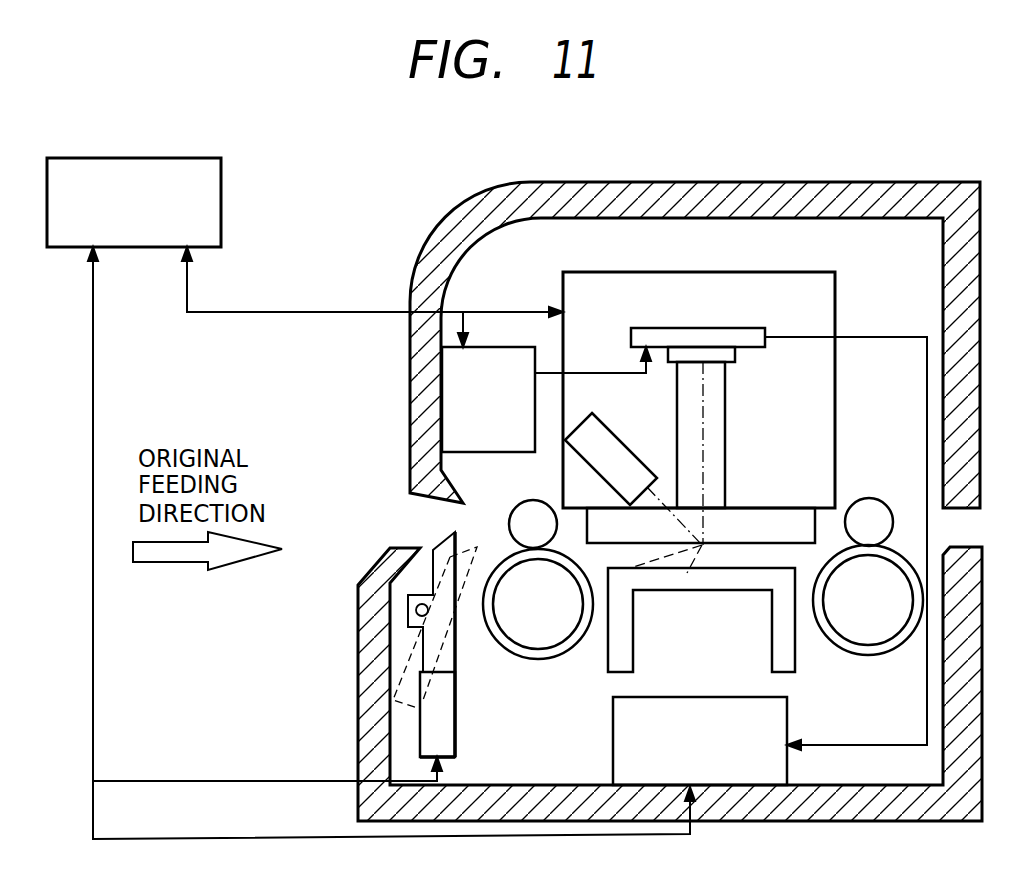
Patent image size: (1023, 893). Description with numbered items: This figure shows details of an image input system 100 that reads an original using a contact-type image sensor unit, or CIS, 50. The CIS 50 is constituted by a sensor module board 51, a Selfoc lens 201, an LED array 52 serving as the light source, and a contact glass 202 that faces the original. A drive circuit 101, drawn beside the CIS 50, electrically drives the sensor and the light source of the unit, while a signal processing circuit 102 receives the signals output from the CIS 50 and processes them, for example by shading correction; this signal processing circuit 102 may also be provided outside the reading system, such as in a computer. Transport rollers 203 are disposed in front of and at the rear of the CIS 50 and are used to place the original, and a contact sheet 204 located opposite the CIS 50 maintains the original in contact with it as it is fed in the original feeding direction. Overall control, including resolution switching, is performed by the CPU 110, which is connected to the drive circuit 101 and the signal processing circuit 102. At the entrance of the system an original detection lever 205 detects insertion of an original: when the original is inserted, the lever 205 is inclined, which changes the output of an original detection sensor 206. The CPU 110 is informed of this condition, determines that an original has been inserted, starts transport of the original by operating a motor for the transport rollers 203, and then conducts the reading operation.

The image input system 100 is at (826, 182).
The central processing unit (CPU) 110 is at (176, 158).
The drive circuit 101 is at (470, 452).
The signal processing circuit 102 is at (787, 715).
The contact-type image sensor unit (CIS) 50 is at (786, 272).
The sensor module board 51 is at (766, 337).
The LED array 52 is at (631, 439).
The Selfoc lens 201 is at (727, 407).
The contact glass 202 is at (762, 513).
The transport rollers 203 is at (537, 660).
The contact sheet 204 is at (688, 573).
The original detection lever 205 is at (442, 540).
The original detection sensor 206 is at (447, 728).